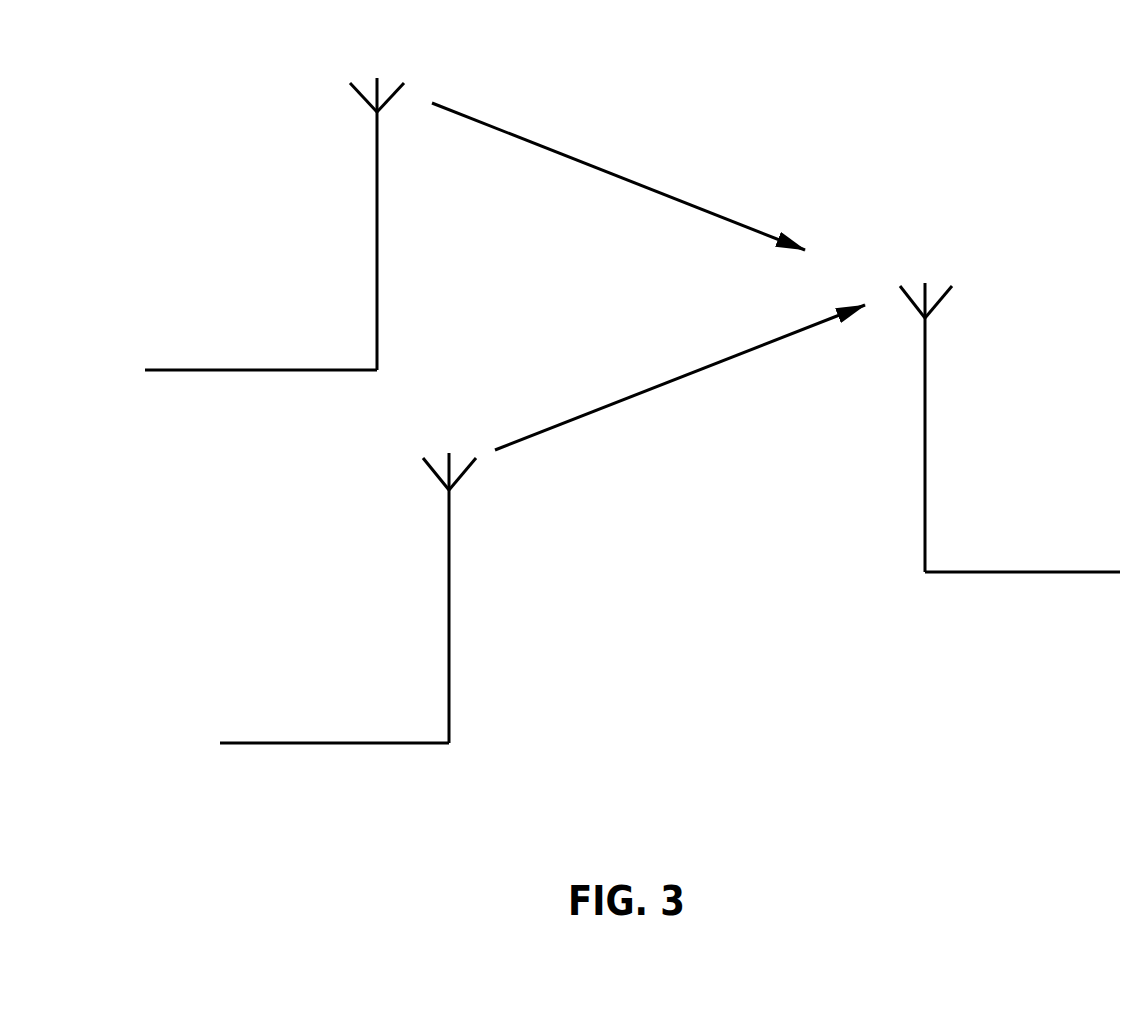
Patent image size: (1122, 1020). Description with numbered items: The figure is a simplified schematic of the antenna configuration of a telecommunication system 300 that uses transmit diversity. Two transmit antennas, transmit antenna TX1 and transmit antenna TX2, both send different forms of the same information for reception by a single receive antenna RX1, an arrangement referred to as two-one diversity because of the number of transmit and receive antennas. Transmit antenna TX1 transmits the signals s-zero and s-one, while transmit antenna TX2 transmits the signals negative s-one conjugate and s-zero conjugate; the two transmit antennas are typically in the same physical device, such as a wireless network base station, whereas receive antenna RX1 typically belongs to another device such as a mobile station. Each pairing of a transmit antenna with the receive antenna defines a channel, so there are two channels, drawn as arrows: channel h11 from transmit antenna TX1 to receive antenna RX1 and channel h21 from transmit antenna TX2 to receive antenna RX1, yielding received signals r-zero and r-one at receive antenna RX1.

The telecommunication system 300 is at (962, 102).
The transmit antenna TX1 is at (274, 245).
The transmit antenna TX2 is at (348, 620).
The receive antenna RX1 is at (1010, 448).
The channel h11 is at (618, 176).
The channel h21 is at (680, 378).